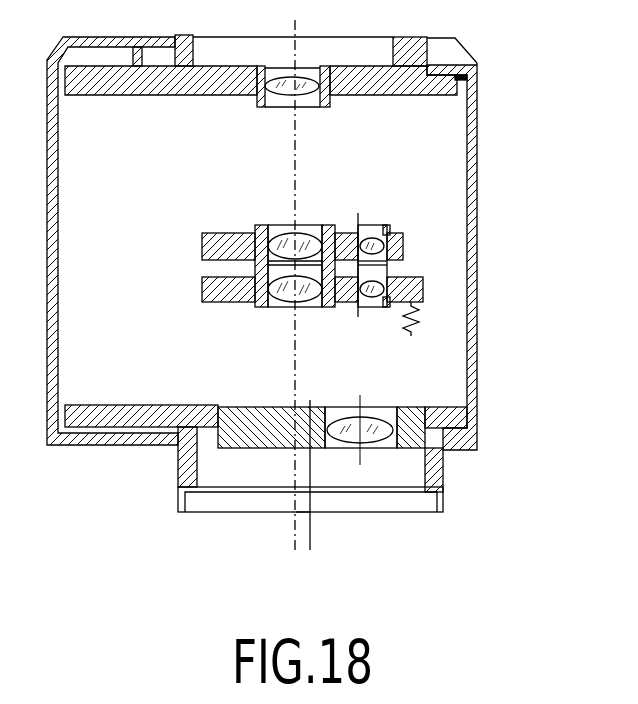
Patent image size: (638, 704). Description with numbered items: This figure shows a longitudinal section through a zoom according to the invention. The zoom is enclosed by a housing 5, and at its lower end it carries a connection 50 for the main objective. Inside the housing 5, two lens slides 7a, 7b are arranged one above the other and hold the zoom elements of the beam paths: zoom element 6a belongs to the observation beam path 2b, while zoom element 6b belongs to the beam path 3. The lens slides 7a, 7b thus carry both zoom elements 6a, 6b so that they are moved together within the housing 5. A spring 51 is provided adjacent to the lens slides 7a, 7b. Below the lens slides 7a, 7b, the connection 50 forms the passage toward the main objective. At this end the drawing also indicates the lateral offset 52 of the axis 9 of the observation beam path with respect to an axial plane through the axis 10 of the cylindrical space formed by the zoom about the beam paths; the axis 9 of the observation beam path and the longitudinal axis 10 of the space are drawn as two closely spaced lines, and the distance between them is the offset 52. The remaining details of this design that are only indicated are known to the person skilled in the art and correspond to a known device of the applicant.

The observation beam path 2b is at (293, 208).
The beam path 3 is at (358, 306).
The housing 5 is at (472, 320).
The zoom element 6a is at (307, 232).
The zoom element 6b is at (367, 229).
The lens slide 7a is at (202, 241).
The lens slide 7b is at (202, 291).
The axis of the observation beam path 9 is at (296, 540).
The longitudinal axis of the space 10 is at (310, 540).
The connection 50 is at (386, 506).
The spring 51 is at (408, 336).
The offset 52 is at (302, 550).